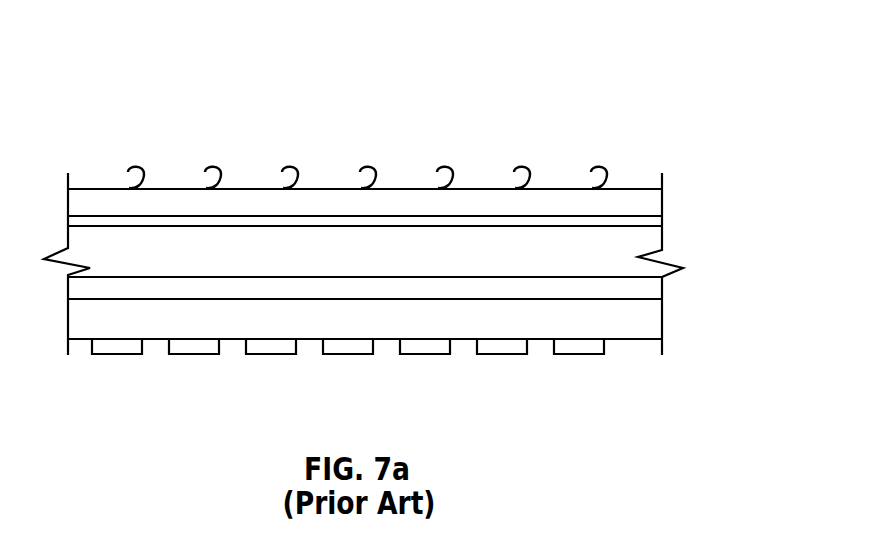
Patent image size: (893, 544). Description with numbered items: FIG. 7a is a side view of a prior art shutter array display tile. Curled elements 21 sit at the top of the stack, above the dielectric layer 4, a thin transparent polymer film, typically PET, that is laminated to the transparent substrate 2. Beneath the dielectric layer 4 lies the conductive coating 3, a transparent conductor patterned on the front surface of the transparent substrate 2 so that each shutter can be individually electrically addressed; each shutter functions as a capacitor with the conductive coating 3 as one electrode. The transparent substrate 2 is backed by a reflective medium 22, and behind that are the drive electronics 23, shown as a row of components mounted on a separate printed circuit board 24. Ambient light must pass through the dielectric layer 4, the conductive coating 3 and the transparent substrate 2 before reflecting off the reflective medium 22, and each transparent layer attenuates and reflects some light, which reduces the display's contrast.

The transparent substrate 2 is at (637, 250).
The conductive coating 3 is at (648, 221).
The dielectric layer 4 is at (637, 203).
The hooks 21 is at (453, 175).
The reflective medium 22 is at (645, 285).
The drive electronics 23 is at (263, 354).
The printed circuit board 24 is at (638, 318).